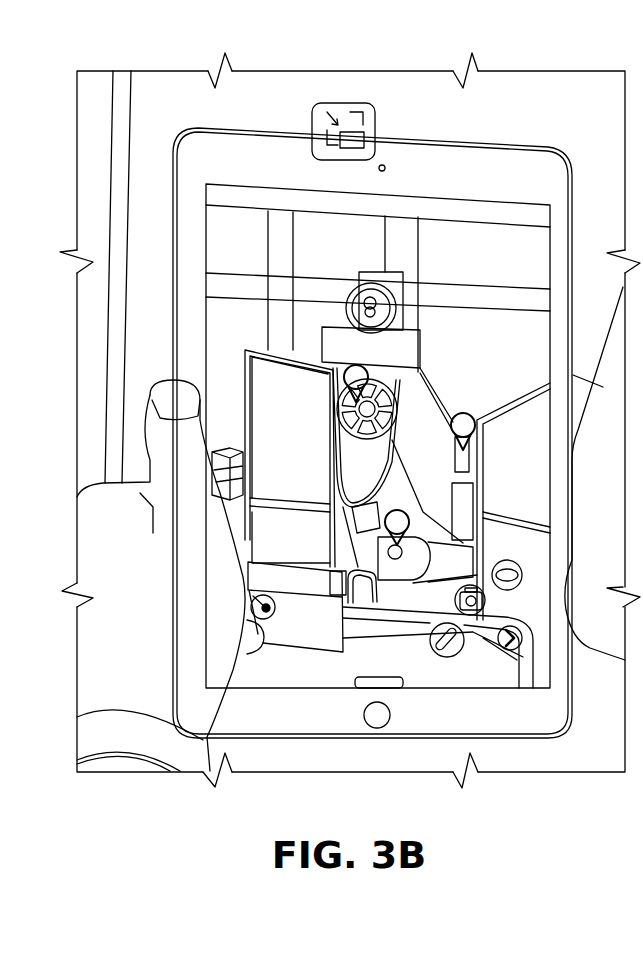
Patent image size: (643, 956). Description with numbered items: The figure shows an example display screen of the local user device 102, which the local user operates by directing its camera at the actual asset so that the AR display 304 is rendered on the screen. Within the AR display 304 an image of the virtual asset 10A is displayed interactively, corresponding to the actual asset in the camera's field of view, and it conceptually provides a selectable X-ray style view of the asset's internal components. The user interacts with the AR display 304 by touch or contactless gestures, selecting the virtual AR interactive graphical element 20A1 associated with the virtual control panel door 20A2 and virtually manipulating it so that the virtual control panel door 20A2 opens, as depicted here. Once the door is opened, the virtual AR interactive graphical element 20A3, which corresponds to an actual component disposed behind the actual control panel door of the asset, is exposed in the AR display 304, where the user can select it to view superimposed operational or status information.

The local user device 102 is at (405, 138).
The AR display 304 is at (480, 202).
The virtual asset 10A is at (448, 380).
The virtual AR interactive graphical element 20A1 is at (473, 414).
The virtual control panel door 20A2 is at (270, 475).
The virtual AR interactive graphical element 20A3 is at (400, 543).